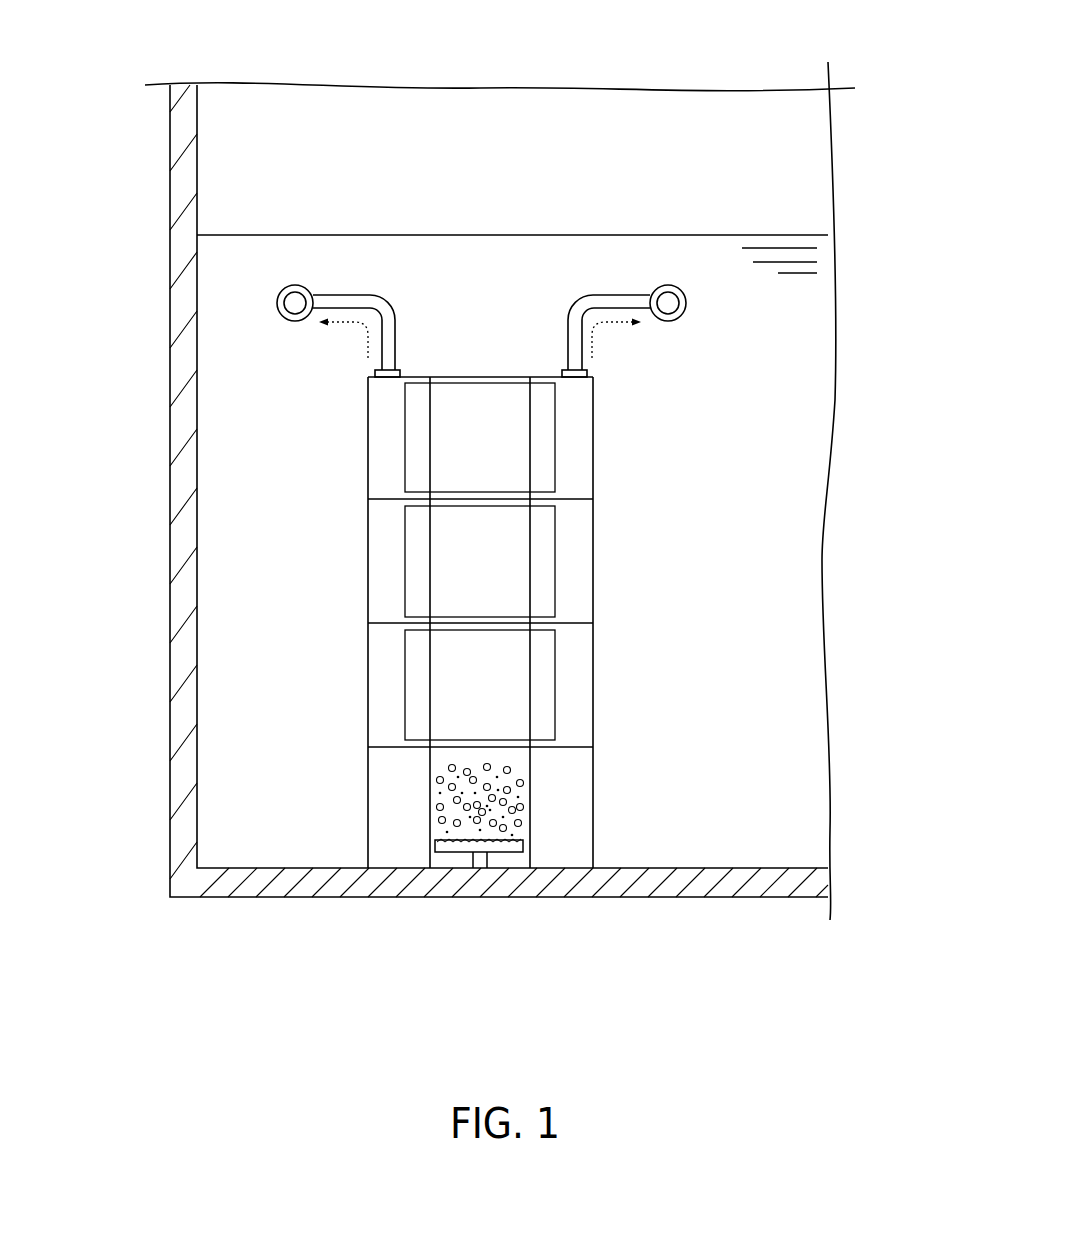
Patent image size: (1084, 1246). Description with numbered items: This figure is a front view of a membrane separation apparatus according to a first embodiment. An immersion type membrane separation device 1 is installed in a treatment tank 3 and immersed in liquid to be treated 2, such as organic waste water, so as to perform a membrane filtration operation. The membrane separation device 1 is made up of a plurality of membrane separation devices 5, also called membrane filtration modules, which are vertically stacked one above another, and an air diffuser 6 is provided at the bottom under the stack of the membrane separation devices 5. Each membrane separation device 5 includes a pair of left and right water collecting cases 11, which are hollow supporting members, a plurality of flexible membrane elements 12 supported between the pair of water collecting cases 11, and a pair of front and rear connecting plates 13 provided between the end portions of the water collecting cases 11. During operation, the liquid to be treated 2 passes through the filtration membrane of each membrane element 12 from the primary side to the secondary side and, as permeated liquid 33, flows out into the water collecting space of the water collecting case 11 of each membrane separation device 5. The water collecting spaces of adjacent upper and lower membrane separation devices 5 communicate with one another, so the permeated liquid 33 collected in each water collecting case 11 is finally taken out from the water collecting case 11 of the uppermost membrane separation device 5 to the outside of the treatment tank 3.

The immersion type membrane separation device 1 is at (466, 346).
The liquid to be treated 2 is at (625, 263).
The treatment tank 3 is at (172, 167).
The membrane separation device 5 is at (600, 477).
The air diffuser 6 is at (452, 860).
The water collecting case 11 is at (380, 413).
The membrane element 12 is at (405, 474).
The connecting plate 13 is at (498, 415).
The permeated liquid 33 is at (366, 333).